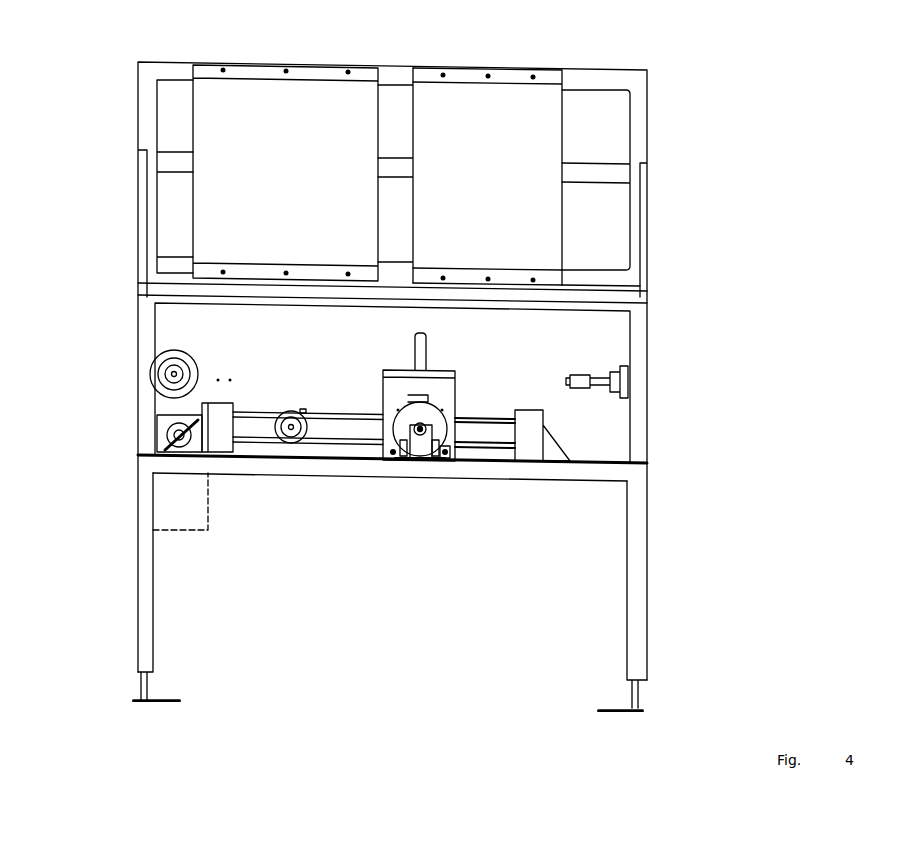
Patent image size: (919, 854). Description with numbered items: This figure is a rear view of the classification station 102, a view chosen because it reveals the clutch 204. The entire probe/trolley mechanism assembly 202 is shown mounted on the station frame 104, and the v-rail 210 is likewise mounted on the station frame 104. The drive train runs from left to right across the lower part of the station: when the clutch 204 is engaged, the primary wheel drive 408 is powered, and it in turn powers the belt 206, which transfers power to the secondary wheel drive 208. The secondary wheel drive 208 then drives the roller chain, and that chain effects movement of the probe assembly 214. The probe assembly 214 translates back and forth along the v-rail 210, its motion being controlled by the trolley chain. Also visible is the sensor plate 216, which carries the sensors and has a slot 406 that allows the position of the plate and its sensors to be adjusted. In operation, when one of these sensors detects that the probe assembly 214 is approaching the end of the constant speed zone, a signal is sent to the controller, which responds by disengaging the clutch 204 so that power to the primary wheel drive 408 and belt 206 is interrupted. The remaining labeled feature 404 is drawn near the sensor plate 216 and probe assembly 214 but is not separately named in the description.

The classification station 102 is at (677, 87).
The station frame 104 is at (640, 140).
The probe/trolley mechanism assembly 202 is at (520, 352).
The clutch 204 is at (152, 339).
The belt 206 is at (247, 382).
The secondary wheel drive 208 is at (292, 437).
The v-rail 210 is at (242, 432).
The probe assembly 214 is at (447, 387).
The sensor plate 216 is at (390, 455).
The motor mount 404 is at (418, 450).
The slot 406 is at (447, 457).
The primary wheel drive 408 is at (160, 372).